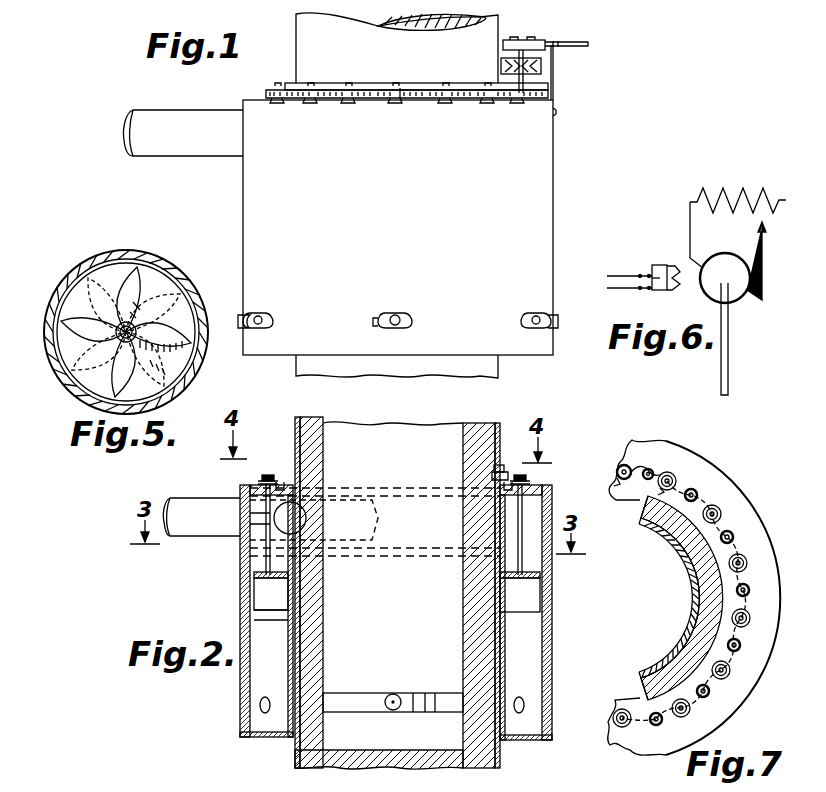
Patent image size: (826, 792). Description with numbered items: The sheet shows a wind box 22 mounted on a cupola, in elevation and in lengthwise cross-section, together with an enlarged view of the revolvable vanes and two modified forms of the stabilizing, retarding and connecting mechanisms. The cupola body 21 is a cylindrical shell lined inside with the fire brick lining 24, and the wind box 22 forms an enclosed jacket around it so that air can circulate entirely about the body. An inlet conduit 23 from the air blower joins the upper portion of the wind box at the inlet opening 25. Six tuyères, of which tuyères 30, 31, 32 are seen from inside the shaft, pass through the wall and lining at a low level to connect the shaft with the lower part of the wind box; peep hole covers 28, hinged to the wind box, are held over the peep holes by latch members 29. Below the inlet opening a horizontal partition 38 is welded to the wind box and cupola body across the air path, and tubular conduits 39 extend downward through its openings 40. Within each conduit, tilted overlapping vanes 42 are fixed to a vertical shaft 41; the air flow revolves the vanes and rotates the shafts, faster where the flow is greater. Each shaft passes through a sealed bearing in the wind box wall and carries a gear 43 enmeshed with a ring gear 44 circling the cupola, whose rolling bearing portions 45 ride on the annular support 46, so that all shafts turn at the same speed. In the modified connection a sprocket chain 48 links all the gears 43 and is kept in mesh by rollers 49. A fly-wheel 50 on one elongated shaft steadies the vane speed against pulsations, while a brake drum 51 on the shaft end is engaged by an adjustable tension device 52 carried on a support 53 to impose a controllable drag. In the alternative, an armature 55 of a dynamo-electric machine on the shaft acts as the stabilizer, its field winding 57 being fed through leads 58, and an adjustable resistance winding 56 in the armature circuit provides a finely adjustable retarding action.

In FIG. 1, the cupola body 21 is at (296, 32).
In FIG. 2, the cupola body 21 is at (298, 440).
In FIG. 7, the cupola body 21 is at (712, 560).
In FIG. 1, the wind box 22 is at (243, 200).
In FIG. 2, the wind box 22 is at (240, 688).
In FIG. 7, the wind box 22 is at (740, 498).
In FIG. 1, the inlet conduit 23 is at (210, 156).
In FIG. 2, the inlet conduit 23 is at (192, 536).
In FIG. 2, the fire brick lining 24 is at (300, 425).
In FIG. 7, the fire brick lining 24 is at (682, 545).
In FIG. 2, the inlet opening 25 is at (283, 514).
In FIG. 1, the peep hole covers 28 is at (404, 314).
In FIG. 1, the latch members 29 is at (383, 316).
In FIG. 2, the tuyère 30 is at (360, 678).
In FIG. 2, the tuyère 31 is at (408, 695).
In FIG. 2, the tuyère 32 is at (448, 696).
In FIG. 2, the partition 38 is at (425, 550).
In FIG. 5, the tubular conduits 39 is at (176, 270).
In FIG. 2, the tubular conduits 39 is at (254, 598).
In FIG. 2, the openings 40 is at (256, 615).
In FIG. 1, the shafts 41 is at (401, 88).
In FIG. 5, the shafts 41 is at (70, 355).
In FIG. 6, the shafts 41 is at (729, 358).
In FIG. 2, the shafts 41 is at (266, 560).
In FIG. 7, the shafts 41 is at (628, 468).
In FIG. 5, the vanes 42 is at (132, 255).
In FIG. 2, the vanes 42 is at (254, 576).
In FIG. 1, the gear 43 is at (396, 100).
In FIG. 2, the gear 43 is at (526, 482).
In FIG. 7, the gear 43 is at (616, 482).
In FIG. 1, the ring gear 44 is at (380, 98).
In FIG. 2, the ring gear 44 is at (284, 482).
In FIG. 2, the rolling bearing portions 45 is at (496, 470).
In FIG. 2, the annular support 46 is at (494, 480).
In FIG. 7, the sprocket chain 48 is at (700, 502).
In FIG. 7, the rollers 49 is at (654, 478).
In FIG. 1, the fly-wheel 50 is at (541, 66).
In FIG. 1, the brake drum 51 is at (533, 40).
In FIG. 1, the adjustable tension device 52 is at (560, 42).
In FIG. 1, the support 53 is at (556, 96).
In FIG. 6, the armature 55 is at (746, 240).
In FIG. 6, the adjustable resistance winding 56 is at (750, 195).
In FIG. 6, the field winding 57 is at (660, 266).
In FIG. 6, the leads 58 is at (618, 282).